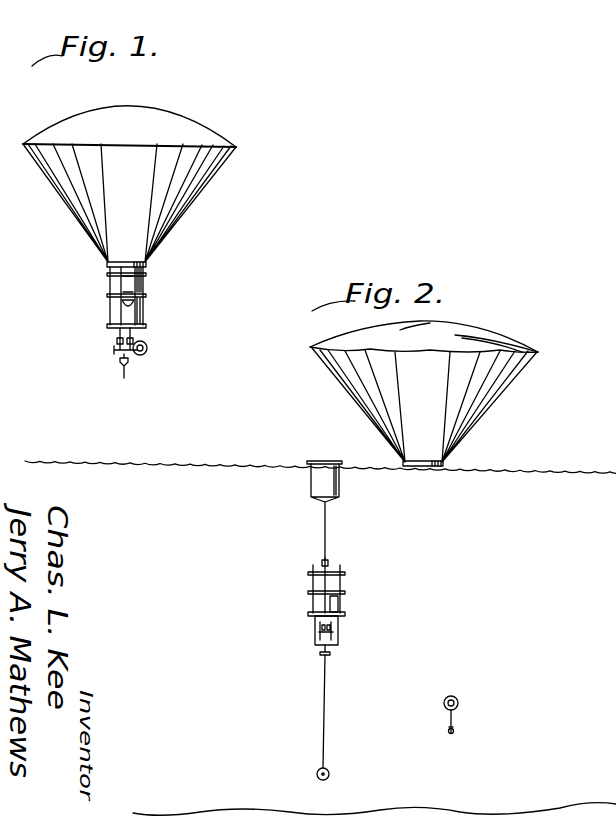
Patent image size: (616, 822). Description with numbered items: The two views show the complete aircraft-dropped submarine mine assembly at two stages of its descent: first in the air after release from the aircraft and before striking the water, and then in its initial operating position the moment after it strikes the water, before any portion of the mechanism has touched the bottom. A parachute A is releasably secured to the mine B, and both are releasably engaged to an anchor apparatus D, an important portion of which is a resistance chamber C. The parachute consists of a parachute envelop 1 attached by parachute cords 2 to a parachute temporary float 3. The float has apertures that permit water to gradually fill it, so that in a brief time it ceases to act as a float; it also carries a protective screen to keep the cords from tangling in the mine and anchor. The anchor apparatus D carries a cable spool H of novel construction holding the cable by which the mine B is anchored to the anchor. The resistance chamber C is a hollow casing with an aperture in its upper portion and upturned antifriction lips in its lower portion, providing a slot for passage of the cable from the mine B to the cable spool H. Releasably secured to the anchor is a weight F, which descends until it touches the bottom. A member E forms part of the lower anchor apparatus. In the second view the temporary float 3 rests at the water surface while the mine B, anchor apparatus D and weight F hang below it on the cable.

In FIG. 1, the parachute envelop 1 is at (165, 118).
In FIG. 2, the parachute envelop 1 is at (442, 337).
In FIG. 1, the parachute cords 2 is at (192, 190).
In FIG. 2, the parachute cords 2 is at (480, 403).
In FIG. 1, the parachute temporary float 3 is at (105, 263).
In FIG. 2, the parachute temporary float 3 is at (420, 467).
In FIG. 1, the parachute A is at (150, 261).
In FIG. 2, the parachute A is at (540, 352).
In FIG. 1, the mine B is at (108, 288).
In FIG. 2, the mine B is at (320, 484).
In FIG. 1, the resistance chamber C is at (110, 318).
In FIG. 2, the resistance chamber C is at (318, 603).
In FIG. 1, the anchor apparatus D is at (150, 322).
In FIG. 2, the anchor apparatus D is at (345, 614).
In FIG. 1, the member E is at (148, 350).
In FIG. 2, the member E is at (459, 700).
In FIG. 1, the weight F is at (120, 379).
In FIG. 2, the weight F is at (330, 773).
In FIG. 1, the cable spool H is at (118, 352).
In FIG. 2, the cable spool H is at (336, 642).